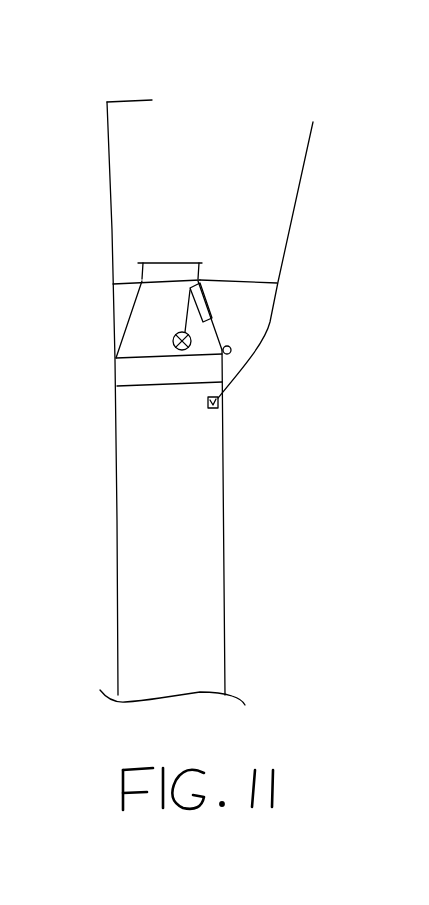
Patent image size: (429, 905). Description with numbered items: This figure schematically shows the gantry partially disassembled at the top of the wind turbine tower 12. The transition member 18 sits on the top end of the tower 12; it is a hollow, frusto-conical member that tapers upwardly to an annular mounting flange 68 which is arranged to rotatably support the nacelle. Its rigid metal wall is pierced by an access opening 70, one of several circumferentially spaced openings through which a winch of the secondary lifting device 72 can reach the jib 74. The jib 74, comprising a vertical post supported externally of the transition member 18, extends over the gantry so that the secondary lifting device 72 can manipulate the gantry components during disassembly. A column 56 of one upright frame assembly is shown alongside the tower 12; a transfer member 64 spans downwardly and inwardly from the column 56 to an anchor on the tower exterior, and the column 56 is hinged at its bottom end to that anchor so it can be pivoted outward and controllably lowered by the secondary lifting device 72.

The tower 12 is at (225, 550).
The transition member 18 is at (170, 200).
The column 56 is at (299, 184).
The transfer member 64 is at (241, 363).
The annular mounting flange 68 is at (172, 260).
The access opening 70 is at (219, 272).
The secondary lifting device 72 is at (246, 314).
The jib 74 is at (109, 177).